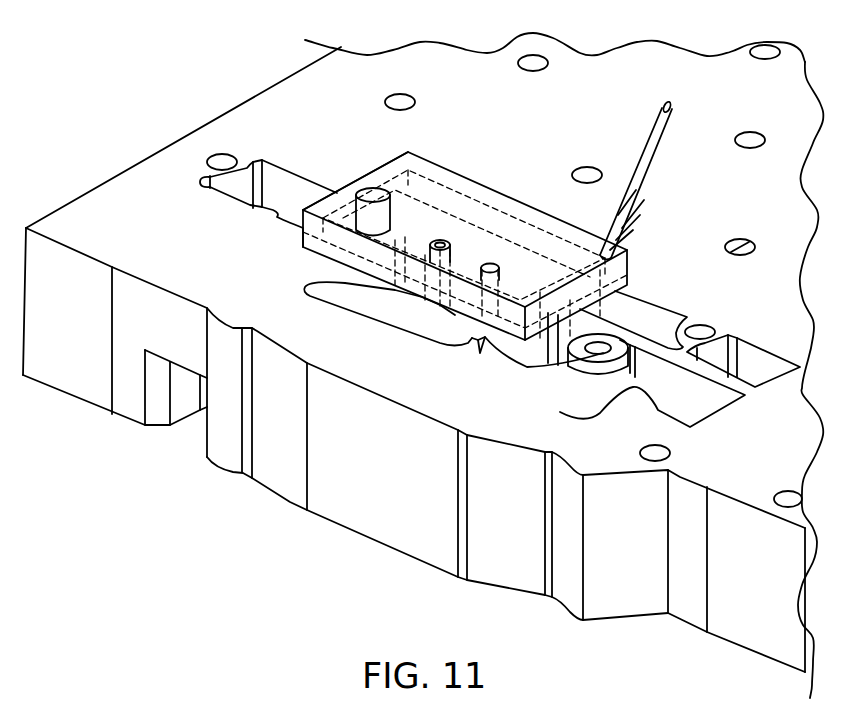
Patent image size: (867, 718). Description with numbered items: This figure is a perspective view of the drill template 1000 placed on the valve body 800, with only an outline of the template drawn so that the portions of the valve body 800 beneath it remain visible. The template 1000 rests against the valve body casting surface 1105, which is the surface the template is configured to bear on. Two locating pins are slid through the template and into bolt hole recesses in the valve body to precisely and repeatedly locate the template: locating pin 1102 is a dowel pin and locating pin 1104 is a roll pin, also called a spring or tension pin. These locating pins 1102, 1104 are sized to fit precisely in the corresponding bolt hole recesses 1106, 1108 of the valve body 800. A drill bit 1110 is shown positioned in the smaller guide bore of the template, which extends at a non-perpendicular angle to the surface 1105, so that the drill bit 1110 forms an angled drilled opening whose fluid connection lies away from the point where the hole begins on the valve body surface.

The valve body 800 is at (126, 57).
The drill template 1000 is at (495, 197).
The locating pin 1102 is at (375, 194).
The locating pin 1104 is at (433, 295).
The valve body casting surface 1105 is at (243, 262).
The bolt hole recess 1106 is at (330, 188).
The bolt hole recess 1108 is at (406, 300).
The drill bit 1110 is at (650, 137).